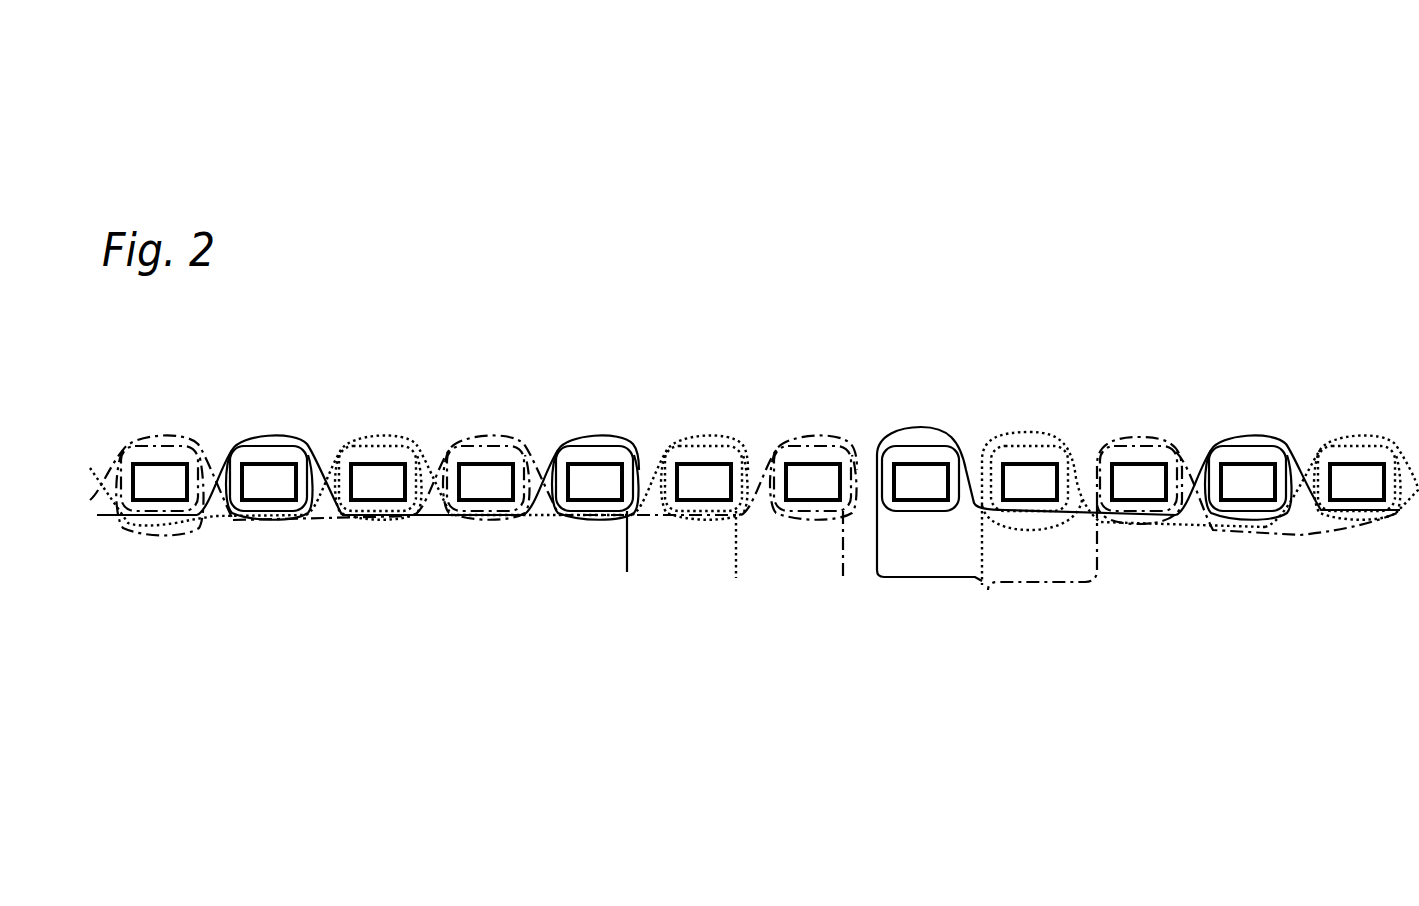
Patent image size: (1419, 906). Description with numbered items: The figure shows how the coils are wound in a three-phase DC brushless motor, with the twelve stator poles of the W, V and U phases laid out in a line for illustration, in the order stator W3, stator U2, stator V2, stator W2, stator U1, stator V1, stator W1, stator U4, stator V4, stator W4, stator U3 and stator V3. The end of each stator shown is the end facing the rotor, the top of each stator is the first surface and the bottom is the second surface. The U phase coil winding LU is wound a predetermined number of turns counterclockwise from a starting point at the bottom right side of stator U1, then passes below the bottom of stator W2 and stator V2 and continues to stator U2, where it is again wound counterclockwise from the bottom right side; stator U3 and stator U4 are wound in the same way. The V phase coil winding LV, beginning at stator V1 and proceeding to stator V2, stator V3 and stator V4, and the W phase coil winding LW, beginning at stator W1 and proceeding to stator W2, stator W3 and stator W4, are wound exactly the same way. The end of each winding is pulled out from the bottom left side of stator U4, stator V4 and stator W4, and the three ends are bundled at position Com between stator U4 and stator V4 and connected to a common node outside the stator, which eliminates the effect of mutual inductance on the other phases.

The stator W3 is at (161, 450).
The stator U2 is at (269, 442).
The stator V2 is at (378, 442).
The stator W2 is at (486, 442).
The stator U1 is at (581, 442).
The stator V1 is at (690, 442).
The stator W1 is at (799, 442).
The stator U4 is at (1026, 439).
The stator V4 is at (1123, 447).
The stator W4 is at (1248, 449).
The stator U3 is at (1288, 442).
The stator V3 is at (1341, 445).
The U phase coil winding LU is at (625, 570).
The V phase coil winding LV is at (722, 570).
The W phase coil winding LW is at (830, 570).
The common bundling position Com is at (987, 567).